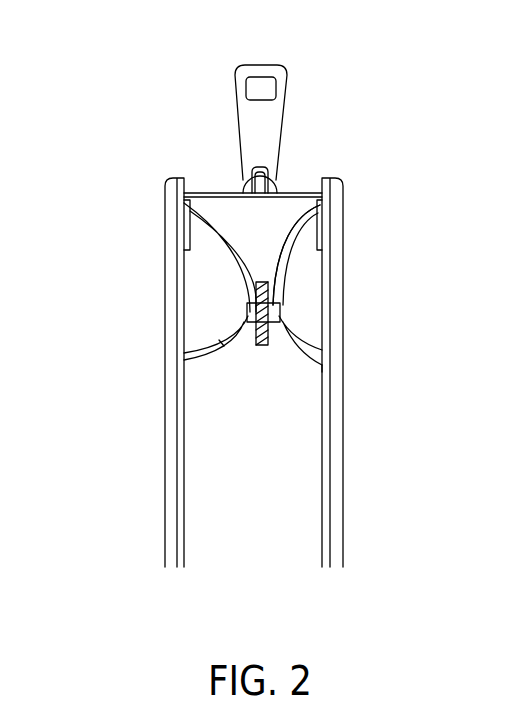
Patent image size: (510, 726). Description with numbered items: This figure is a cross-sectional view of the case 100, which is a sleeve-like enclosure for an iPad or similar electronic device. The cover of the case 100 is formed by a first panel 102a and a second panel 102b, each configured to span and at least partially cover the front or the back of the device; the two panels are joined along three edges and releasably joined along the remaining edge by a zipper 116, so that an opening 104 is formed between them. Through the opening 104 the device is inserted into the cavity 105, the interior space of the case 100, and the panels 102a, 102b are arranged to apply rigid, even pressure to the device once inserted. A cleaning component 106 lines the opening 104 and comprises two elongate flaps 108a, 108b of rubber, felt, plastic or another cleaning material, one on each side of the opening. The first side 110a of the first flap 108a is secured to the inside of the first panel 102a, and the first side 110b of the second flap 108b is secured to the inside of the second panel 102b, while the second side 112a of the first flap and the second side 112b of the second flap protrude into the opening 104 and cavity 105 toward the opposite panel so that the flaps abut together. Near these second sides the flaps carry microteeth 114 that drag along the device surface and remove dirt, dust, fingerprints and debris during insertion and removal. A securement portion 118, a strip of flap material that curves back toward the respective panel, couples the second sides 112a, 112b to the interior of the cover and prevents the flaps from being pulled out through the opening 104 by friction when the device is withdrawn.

The case 100 is at (151, 63).
The first panel 102a is at (335, 247).
The second panel 102b is at (170, 247).
The opening 104 is at (252, 222).
The cavity 105 is at (277, 505).
The cleaning component 106 is at (292, 287).
The first flap 108a is at (299, 306).
The second flap 108b is at (228, 305).
The first side of the first flap 110a is at (320, 212).
The first side of the second flap 110b is at (186, 215).
The second side of the first flap 112a is at (303, 350).
The second side of the second flap 112b is at (245, 320).
The microteeth 114 is at (262, 340).
The zipper 116 is at (287, 171).
The securement portion 118 is at (222, 342).